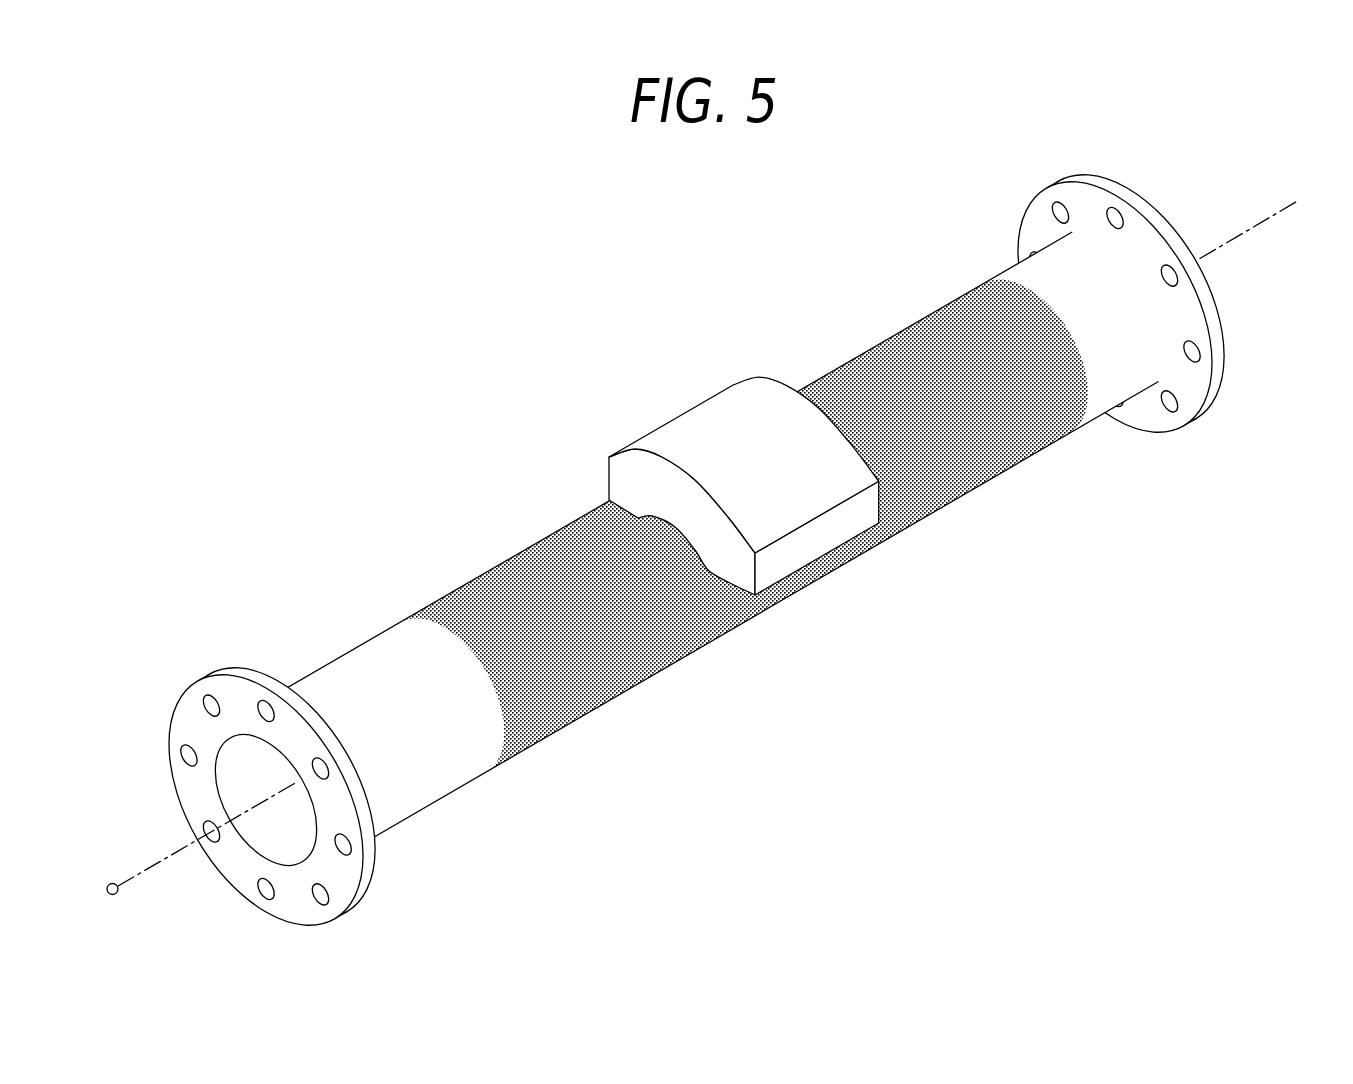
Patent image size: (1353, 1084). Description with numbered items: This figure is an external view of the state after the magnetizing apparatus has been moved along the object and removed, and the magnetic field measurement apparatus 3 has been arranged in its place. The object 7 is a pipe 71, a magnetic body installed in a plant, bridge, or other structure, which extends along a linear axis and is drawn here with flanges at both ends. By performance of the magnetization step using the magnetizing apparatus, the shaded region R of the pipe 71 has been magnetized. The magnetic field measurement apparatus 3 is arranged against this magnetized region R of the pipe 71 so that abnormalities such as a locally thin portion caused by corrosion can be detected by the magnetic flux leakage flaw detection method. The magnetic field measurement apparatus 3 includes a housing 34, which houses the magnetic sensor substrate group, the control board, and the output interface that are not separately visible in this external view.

The magnetic field measurement apparatus 3 is at (744, 457).
The housing 34 is at (748, 428).
The region R is at (517, 587).
The pipe 71 is at (744, 505).
The object 7 is at (696, 550).